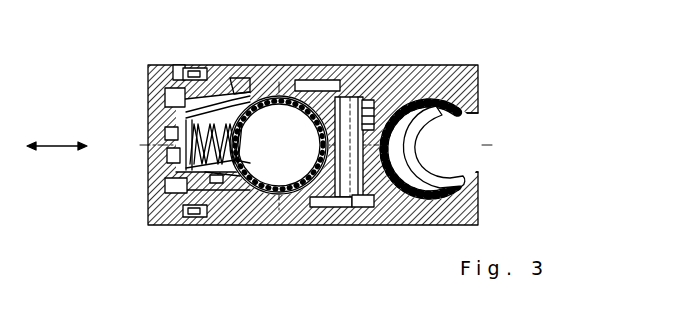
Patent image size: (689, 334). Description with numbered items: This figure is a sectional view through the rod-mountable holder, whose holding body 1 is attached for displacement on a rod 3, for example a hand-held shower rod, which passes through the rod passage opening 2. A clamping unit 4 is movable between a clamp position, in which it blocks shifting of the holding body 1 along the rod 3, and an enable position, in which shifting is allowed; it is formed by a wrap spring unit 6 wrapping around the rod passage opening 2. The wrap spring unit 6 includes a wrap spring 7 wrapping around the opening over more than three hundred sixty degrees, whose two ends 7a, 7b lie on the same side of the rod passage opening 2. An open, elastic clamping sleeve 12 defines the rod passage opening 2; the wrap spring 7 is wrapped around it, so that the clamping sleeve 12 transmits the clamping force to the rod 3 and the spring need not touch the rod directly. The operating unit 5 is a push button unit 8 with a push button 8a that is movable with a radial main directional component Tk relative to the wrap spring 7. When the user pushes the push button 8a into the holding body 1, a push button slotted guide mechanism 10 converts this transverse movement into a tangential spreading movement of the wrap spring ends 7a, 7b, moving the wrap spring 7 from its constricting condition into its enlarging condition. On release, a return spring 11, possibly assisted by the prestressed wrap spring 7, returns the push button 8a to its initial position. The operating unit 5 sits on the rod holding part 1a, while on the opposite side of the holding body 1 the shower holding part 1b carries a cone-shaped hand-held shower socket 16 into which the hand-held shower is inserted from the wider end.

The holding body 1 is at (340, 210).
The rod holding part 1a is at (323, 225).
The shower holding part 1b is at (419, 226).
The rod passage opening 2 is at (313, 100).
The rod 3 is at (295, 80).
The clamping unit 4 is at (243, 72).
The operating unit 5 is at (165, 163).
The wrap spring unit 6 is at (254, 80).
The wrap spring 7 is at (250, 200).
The wrap spring end 7a is at (204, 80).
The wrap spring end 7b is at (218, 205).
The push button unit 8 is at (160, 131).
The push button 8a is at (150, 101).
The push button slotted guide mechanism 10 is at (191, 70).
The return spring 11 is at (162, 148).
The clamping sleeve 12 is at (292, 225).
The hand-held shower socket 16 is at (418, 177).
The radial main directional component Tk is at (52, 148).